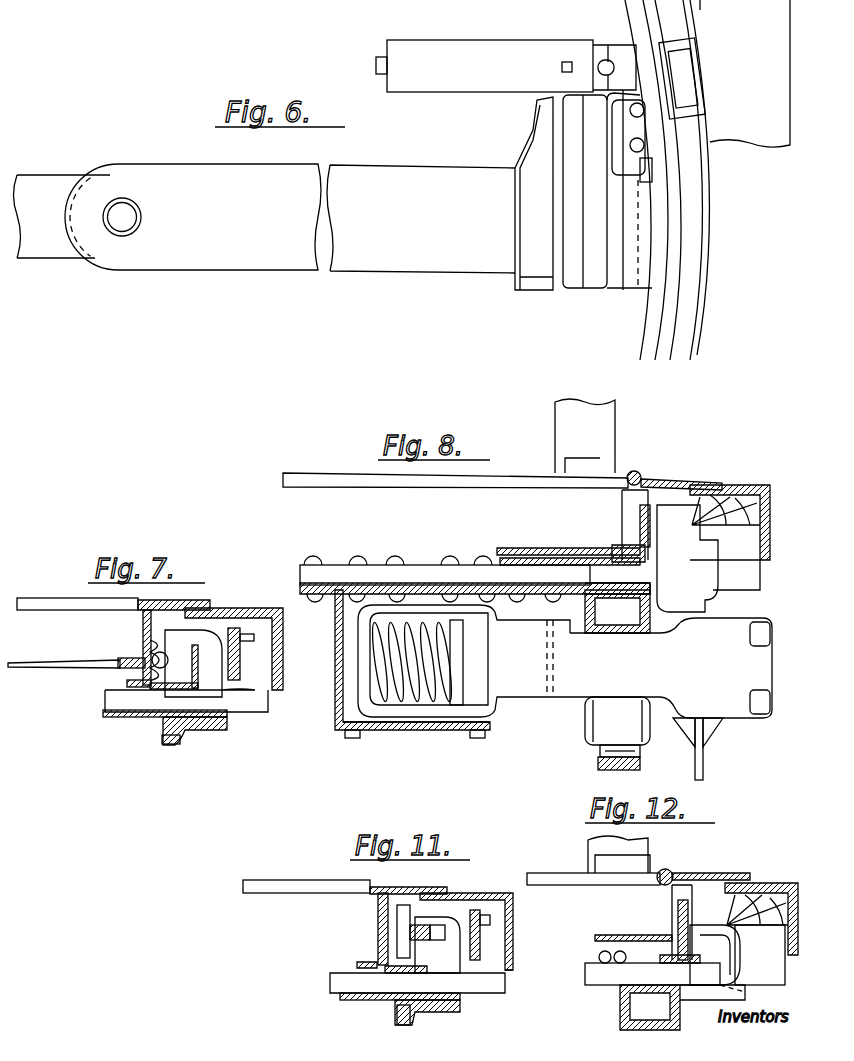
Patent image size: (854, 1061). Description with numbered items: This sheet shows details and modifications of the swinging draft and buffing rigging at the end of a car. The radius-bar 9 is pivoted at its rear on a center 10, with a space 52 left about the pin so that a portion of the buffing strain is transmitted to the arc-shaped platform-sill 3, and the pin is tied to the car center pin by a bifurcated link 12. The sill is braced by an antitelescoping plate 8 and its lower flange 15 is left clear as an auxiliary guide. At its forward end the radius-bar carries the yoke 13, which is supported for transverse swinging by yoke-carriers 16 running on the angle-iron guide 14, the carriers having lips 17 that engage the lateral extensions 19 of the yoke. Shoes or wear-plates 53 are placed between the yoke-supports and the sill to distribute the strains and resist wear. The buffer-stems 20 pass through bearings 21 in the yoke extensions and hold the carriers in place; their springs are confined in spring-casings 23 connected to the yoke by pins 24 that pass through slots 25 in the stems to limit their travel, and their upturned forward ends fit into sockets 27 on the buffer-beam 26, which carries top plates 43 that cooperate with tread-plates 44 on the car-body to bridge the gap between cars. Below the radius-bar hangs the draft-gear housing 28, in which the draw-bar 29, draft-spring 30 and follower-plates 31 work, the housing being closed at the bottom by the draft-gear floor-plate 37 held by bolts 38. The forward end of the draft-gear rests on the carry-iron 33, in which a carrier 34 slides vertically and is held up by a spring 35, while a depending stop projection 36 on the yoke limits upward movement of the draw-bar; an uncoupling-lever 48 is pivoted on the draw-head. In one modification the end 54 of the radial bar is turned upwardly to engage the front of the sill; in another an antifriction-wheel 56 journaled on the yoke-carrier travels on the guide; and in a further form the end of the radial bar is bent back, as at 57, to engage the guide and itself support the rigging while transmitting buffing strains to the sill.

In FIG. 6, the platform-sill 3 is at (648, 180).
In FIG. 7, the platform-sill 3 is at (140, 618).
In FIG. 8, the platform-sill 3 is at (640, 490).
In FIG. 11, the platform-sill 3 is at (375, 895).
In FIG. 12, the platform-sill 3 is at (665, 887).
In FIG. 7, the antitelescoping plate 8 is at (76, 656).
In FIG. 8, the antitelescoping plate 8 is at (568, 545).
In FIG. 12, the antitelescoping plate 8 is at (633, 927).
In FIG. 6, the radius-bar 9 is at (421, 219).
In FIG. 8, the radius-bar 9 is at (420, 572).
In FIG. 12, the radius-bar 9 is at (652, 968).
In FIG. 6, the center 10 is at (124, 215).
In FIG. 6, the link 12 is at (62, 216).
In FIG. 6, the yoke 13 is at (585, 191).
In FIG. 8, the yoke 13 is at (590, 590).
In FIG. 8, the angle-iron guide 14 is at (650, 505).
In FIG. 6, the lower flange 15 is at (698, 238).
In FIG. 7, the lower flange 15 is at (126, 683).
In FIG. 8, the lower flange 15 is at (622, 548).
In FIG. 11, the lower flange 15 is at (377, 963).
In FIG. 12, the lower flange 15 is at (665, 958).
In FIG. 6, the yoke-carrier 16 is at (688, 75).
In FIG. 7, the yoke-carrier 16 is at (186, 663).
In FIG. 8, the yoke-carrier 16 is at (687, 558).
In FIG. 11, the yoke-carrier 16 is at (437, 945).
In FIG. 12, the yoke-carrier 16 is at (748, 992).
In FIG. 7, the lips 17 is at (178, 745).
In FIG. 11, the lips 17 is at (410, 1020).
In FIG. 7, the lateral extensions 19 is at (162, 740).
In FIG. 11, the lateral extensions 19 is at (415, 1018).
In FIG. 6, the buffer-stem 20 is at (376, 66).
In FIG. 7, the buffer-stem 20 is at (186, 700).
In FIG. 8, the buffer-stem 20 is at (732, 588).
In FIG. 11, the buffer-stem 20 is at (330, 980).
In FIG. 12, the buffer-stem 20 is at (760, 975).
In FIG. 7, the bearings 21 is at (112, 718).
In FIG. 11, the bearings 21 is at (375, 1000).
In FIG. 6, the spring-casing 23 is at (490, 53).
In FIG. 6, the pin 24 is at (561, 67).
In FIG. 6, the slot 25 is at (604, 60).
In FIG. 7, the buffer-beam 26 is at (284, 648).
In FIG. 8, the buffer-beam 26 is at (772, 530).
In FIG. 11, the buffer-beam 26 is at (513, 935).
In FIG. 12, the buffer-beam 26 is at (757, 910).
In FIG. 11, the sockets 27 is at (513, 952).
In FIG. 6, the draft-gear housing 28 is at (629, 190).
In FIG. 8, the draft-gear housing 28 is at (335, 660).
In FIG. 8, the draw-bar 29 is at (671, 668).
In FIG. 8, the draft-spring 30 is at (437, 678).
In FIG. 8, the follower-plates 31 is at (463, 648).
In FIG. 8, the carry-iron 33 is at (598, 763).
In FIG. 8, the carrier 34 is at (617, 721).
In FIG. 8, the spring 35 is at (642, 753).
In FIG. 8, the stop projection 36 is at (614, 633).
In FIG. 12, the stop projection 36 is at (648, 1030).
In FIG. 8, the draft-gear floor-plate 37 is at (425, 732).
In FIG. 8, the bolts 38 is at (350, 738).
In FIG. 6, the top plates 43 is at (745, 73).
In FIG. 7, the top plates 43 is at (276, 610).
In FIG. 8, the top plates 43 is at (742, 485).
In FIG. 11, the top plates 43 is at (498, 893).
In FIG. 12, the top plates 43 is at (780, 885).
In FIG. 7, the tread-plates 44 is at (218, 596).
In FIG. 8, the tread-plates 44 is at (700, 483).
In FIG. 11, the tread-plates 44 is at (408, 876).
In FIG. 12, the tread-plates 44 is at (711, 864).
In FIG. 8, the uncoupling-lever 48 is at (705, 749).
In FIG. 6, the space 52 is at (141, 214).
In FIG. 7, the wear-plates 53 is at (160, 645).
In FIG. 8, the end of the radial bar 54 is at (657, 530).
In FIG. 12, the end of the radial bar 54 is at (665, 877).
In FIG. 11, the antifriction-wheel 56 is at (395, 915).
In FIG. 12, the bent-back end of the radial bar 57 is at (715, 955).